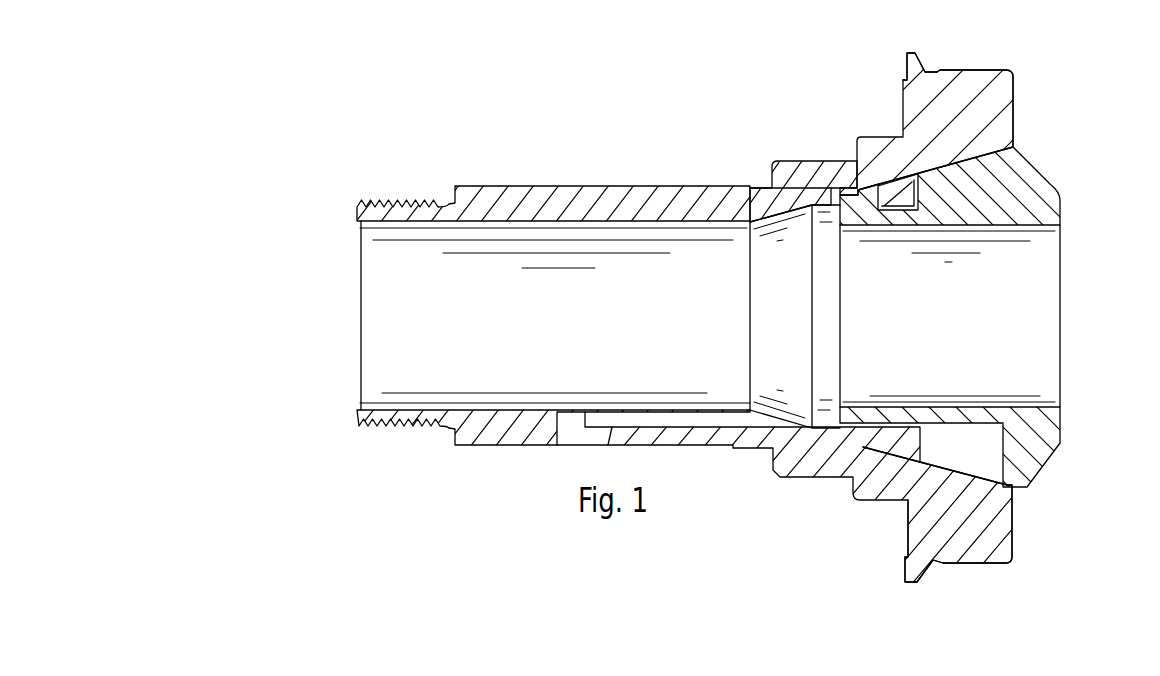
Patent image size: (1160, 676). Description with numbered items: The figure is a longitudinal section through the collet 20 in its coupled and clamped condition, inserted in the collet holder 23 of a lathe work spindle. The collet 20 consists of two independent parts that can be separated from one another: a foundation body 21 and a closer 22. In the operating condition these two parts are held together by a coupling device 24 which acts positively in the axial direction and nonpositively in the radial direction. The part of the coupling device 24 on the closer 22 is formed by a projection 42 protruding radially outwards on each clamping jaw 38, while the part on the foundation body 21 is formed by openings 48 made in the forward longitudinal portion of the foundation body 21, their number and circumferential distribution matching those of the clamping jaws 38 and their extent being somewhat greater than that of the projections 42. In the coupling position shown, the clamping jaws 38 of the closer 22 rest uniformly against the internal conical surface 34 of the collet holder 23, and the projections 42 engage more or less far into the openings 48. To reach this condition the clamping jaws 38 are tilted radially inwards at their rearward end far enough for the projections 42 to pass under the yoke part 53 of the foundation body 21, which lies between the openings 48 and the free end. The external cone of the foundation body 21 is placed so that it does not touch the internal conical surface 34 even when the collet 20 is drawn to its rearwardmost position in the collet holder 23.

The collet 20 is at (579, 114).
The foundation body 21 is at (657, 182).
The closer 22 is at (1090, 149).
The collet holder 23 is at (977, 70).
The coupling device 24 is at (877, 168).
The internal conical surface 34 is at (961, 470).
The clamping jaw 38 is at (1050, 210).
The projection 42 is at (832, 186).
The opening 48 is at (815, 186).
The yoke part 53 is at (900, 185).